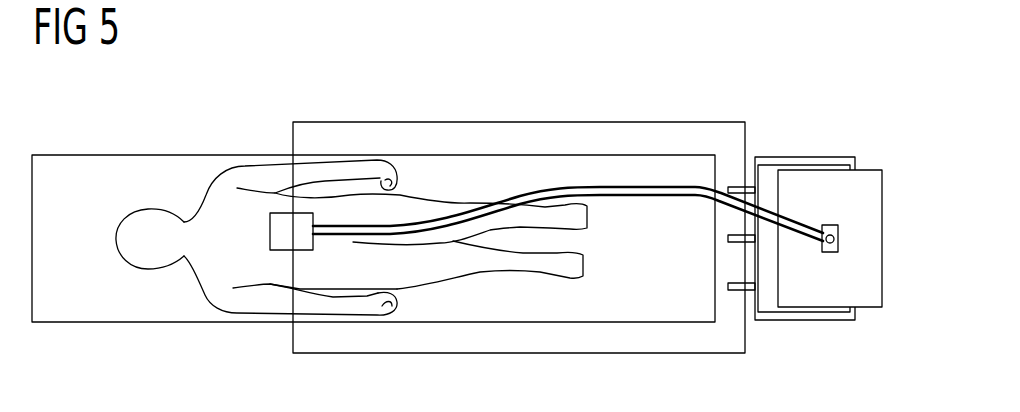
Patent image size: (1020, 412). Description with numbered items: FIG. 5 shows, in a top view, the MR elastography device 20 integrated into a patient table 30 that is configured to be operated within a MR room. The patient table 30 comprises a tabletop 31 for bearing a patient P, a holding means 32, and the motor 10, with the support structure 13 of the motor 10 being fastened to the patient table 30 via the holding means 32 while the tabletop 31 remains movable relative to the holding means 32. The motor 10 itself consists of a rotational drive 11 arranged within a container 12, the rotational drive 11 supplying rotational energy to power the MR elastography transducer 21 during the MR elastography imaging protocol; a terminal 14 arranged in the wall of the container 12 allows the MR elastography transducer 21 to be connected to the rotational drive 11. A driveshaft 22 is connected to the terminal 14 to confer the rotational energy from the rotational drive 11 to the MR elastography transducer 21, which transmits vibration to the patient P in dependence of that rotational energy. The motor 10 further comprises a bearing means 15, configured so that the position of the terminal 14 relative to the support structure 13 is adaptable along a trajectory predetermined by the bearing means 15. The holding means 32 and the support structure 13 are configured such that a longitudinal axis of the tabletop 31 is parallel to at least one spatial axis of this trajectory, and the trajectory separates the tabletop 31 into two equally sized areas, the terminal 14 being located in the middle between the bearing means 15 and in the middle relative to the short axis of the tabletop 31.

The motor 10 is at (810, 98).
The rotational drive 11 is at (797, 288).
The container 12 is at (863, 170).
The support structure 13 is at (778, 157).
The terminal 14 is at (836, 240).
The bearing means 15 is at (828, 165).
The MR elastography device 20 is at (407, 135).
The MR elastography transducer 21 is at (270, 232).
The driveshaft 22 is at (622, 197).
The patient table 30 is at (168, 96).
The tabletop 31 is at (82, 155).
The holding means 32 is at (728, 190).
The patient P is at (117, 238).